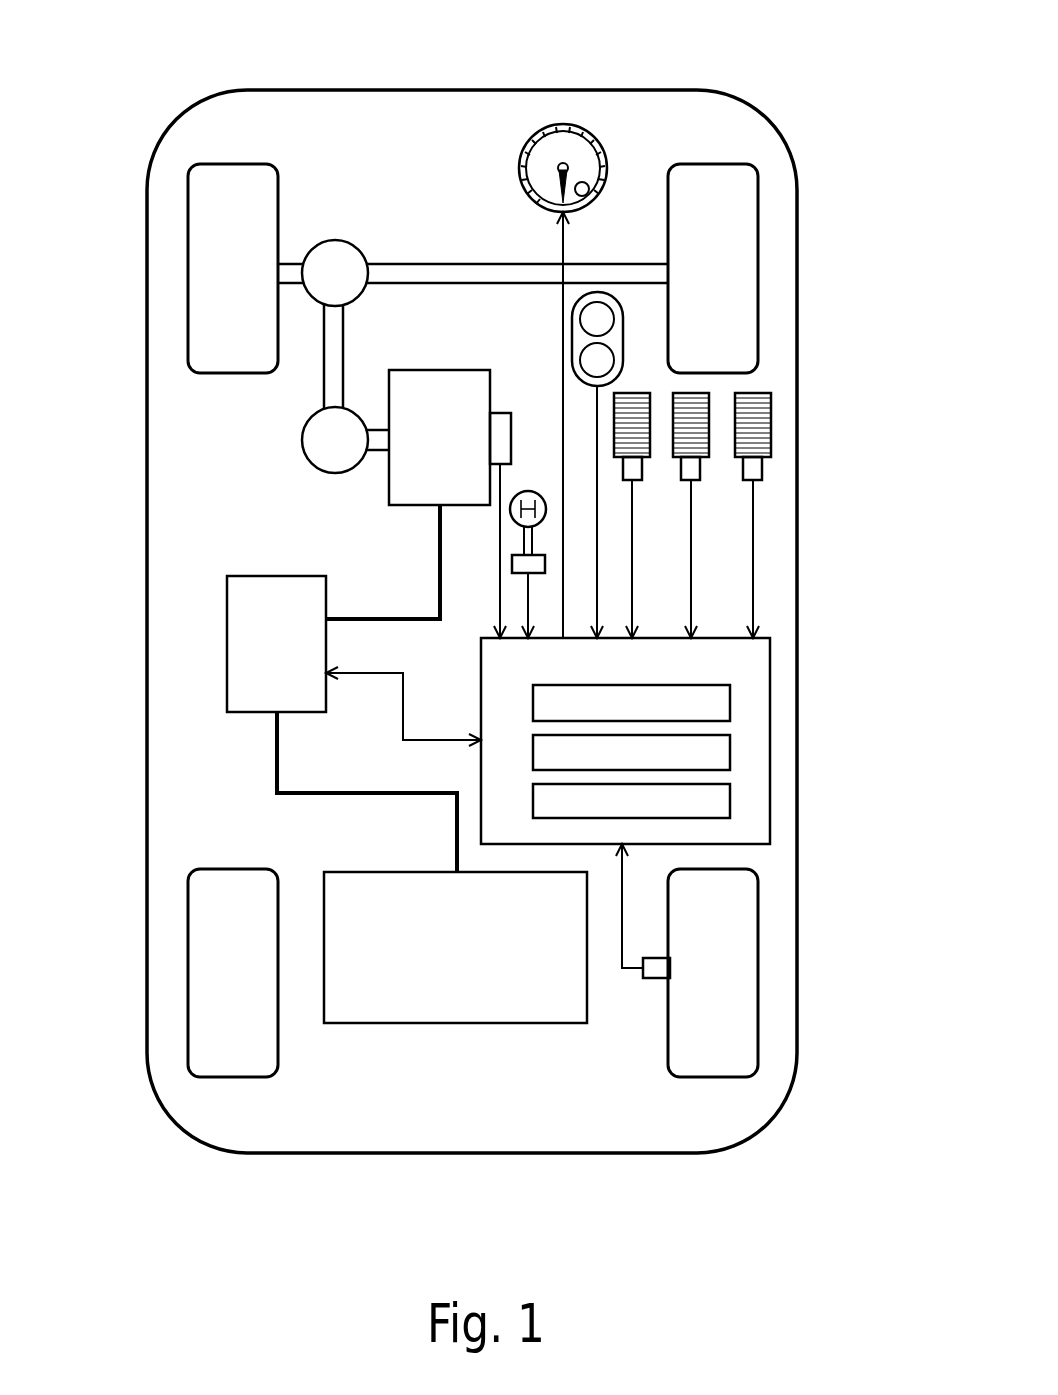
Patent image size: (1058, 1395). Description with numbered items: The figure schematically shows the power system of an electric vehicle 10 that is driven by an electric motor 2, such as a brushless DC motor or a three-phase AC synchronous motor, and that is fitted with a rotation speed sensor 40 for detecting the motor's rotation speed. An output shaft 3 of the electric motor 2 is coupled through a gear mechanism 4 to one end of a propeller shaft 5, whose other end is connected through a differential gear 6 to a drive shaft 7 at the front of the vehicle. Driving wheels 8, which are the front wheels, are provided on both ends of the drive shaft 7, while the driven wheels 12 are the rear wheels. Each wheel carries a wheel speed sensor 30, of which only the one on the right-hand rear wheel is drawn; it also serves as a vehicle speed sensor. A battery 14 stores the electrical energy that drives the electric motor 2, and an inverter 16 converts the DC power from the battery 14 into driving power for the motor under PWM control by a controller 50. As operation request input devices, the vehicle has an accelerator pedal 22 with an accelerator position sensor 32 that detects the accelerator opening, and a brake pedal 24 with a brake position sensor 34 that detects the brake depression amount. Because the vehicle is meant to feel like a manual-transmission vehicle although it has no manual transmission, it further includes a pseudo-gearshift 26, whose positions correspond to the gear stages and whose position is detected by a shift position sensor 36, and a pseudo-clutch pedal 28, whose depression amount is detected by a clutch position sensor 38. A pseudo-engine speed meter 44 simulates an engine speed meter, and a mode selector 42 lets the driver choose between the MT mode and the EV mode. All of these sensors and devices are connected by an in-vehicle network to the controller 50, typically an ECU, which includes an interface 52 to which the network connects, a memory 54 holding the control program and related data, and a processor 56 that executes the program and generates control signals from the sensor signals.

The electric motor 2 is at (408, 506).
The output shaft 3 is at (372, 456).
The gear mechanism 4 is at (302, 432).
The propeller shaft 5 is at (324, 395).
The differential gear 6 is at (335, 240).
The drive shaft 7 is at (396, 264).
The driving wheels 8 is at (188, 222).
The electric vehicle 10 is at (779, 89).
The driven wheels 12 is at (188, 940).
The battery 14 is at (473, 1024).
The inverter 16 is at (227, 642).
The accelerator pedal 22 is at (771, 403).
The brake pedal 24 is at (710, 393).
The pseudo-gearshift 26 is at (532, 491).
The pseudo-clutch pedal 28 is at (650, 393).
The wheel speed sensor 30 is at (656, 979).
The accelerator position sensor 32 is at (763, 470).
The brake position sensor 34 is at (700, 482).
The shift position sensor 36 is at (545, 573).
The clutch position sensor 38 is at (642, 482).
The rotation speed sensor 40 is at (500, 413).
The mode selector 42 is at (623, 330).
The pseudo-engine speed meter 44 is at (571, 123).
The controller 50 is at (687, 741).
The interface 52 is at (730, 706).
The memory 54 is at (730, 756).
The processor 56 is at (730, 800).